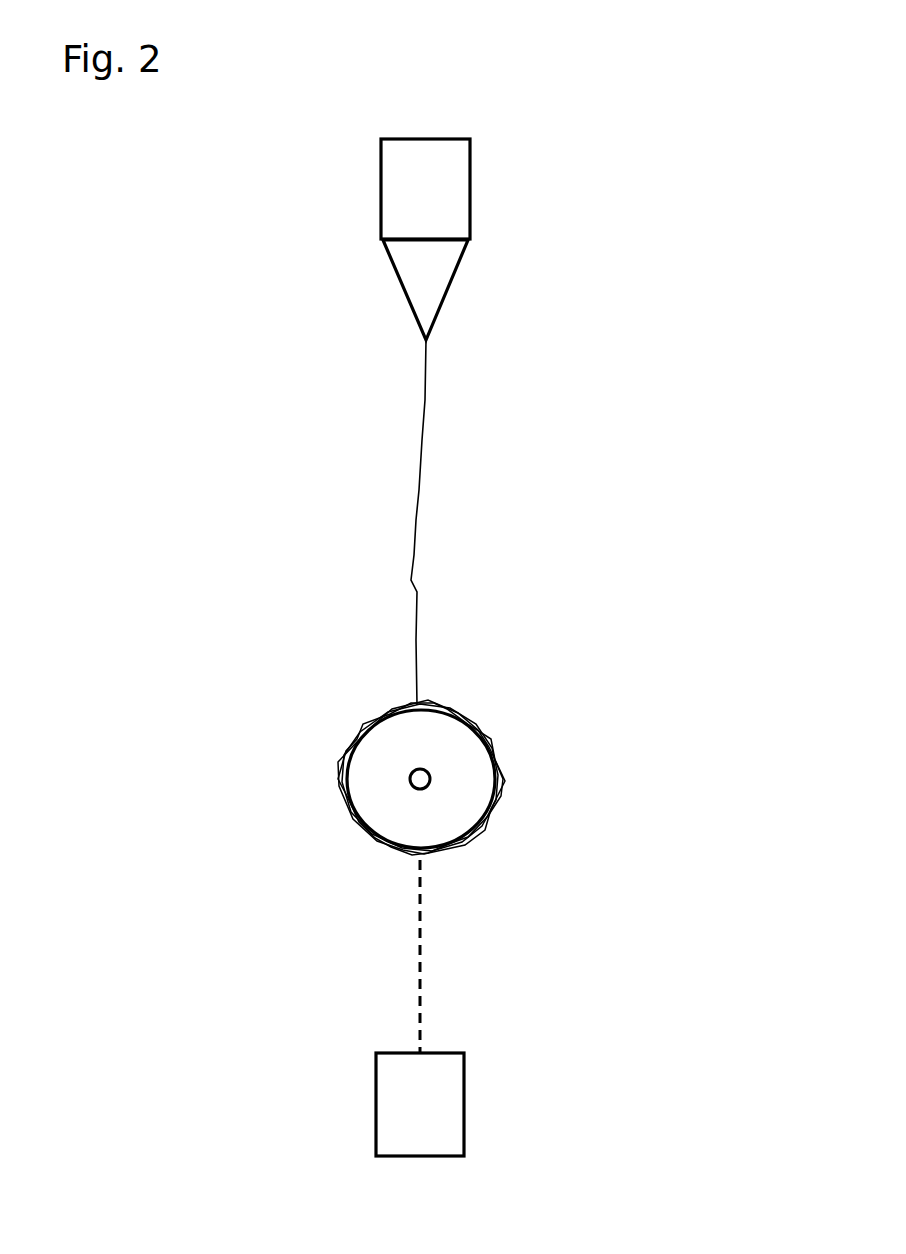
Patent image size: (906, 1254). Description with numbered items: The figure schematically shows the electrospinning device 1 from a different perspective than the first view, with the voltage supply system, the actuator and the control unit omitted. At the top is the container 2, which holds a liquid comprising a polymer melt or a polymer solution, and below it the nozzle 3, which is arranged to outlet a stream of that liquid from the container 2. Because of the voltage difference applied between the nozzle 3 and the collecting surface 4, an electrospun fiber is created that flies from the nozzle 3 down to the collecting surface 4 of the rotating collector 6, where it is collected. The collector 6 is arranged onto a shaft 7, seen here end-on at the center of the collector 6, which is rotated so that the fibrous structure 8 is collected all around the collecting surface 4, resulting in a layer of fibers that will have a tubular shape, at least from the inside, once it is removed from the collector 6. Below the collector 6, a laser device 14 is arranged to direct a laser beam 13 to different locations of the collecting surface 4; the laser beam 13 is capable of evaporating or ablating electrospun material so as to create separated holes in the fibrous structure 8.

The electrospinning device 1 is at (649, 118).
The container 2 is at (385, 177).
The nozzle 3 is at (452, 278).
The collecting surface 4 is at (482, 728).
The rotating collector 6 is at (370, 764).
The shaft 7 is at (430, 780).
The electrospun fibrous structure 8 is at (461, 705).
The laser beam 13 is at (418, 975).
The laser device 14 is at (380, 1093).